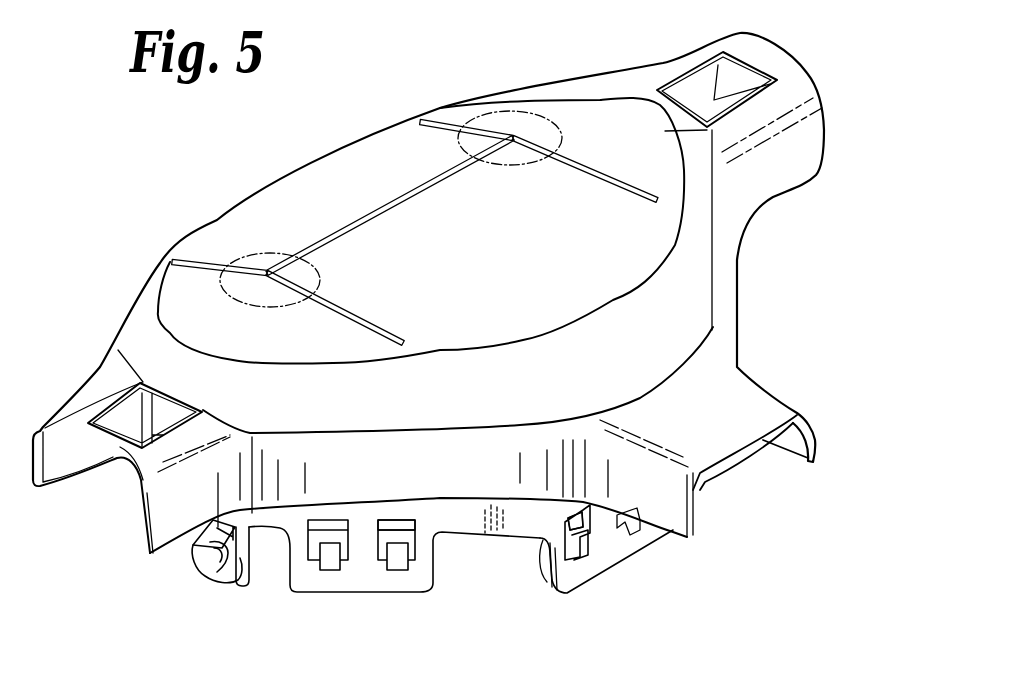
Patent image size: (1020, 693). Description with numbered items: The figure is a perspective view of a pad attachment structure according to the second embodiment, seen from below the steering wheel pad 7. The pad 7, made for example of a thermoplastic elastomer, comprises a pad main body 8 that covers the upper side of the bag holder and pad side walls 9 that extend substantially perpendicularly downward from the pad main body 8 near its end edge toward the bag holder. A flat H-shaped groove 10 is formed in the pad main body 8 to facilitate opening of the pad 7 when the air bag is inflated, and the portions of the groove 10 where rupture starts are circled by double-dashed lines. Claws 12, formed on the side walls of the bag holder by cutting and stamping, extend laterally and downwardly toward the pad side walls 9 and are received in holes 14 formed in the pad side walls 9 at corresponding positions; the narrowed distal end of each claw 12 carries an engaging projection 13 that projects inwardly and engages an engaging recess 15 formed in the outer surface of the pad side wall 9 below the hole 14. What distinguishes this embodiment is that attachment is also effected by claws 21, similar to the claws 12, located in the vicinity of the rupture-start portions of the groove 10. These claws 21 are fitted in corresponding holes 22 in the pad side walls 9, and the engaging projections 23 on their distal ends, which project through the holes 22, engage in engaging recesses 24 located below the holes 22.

The steering wheel pad 7 is at (283, 214).
The pad main body 8 is at (343, 160).
The pad side walls 9 is at (368, 577).
The groove 10 is at (402, 194).
The claws 12 is at (412, 537).
The engaging projection 13 is at (567, 593).
The holes 14 is at (397, 520).
The engaging recesses 15 is at (542, 573).
The claws 21 is at (195, 540).
The holes 22 is at (255, 552).
The engaging projections 23 is at (223, 580).
The engaging recesses 24 is at (230, 578).